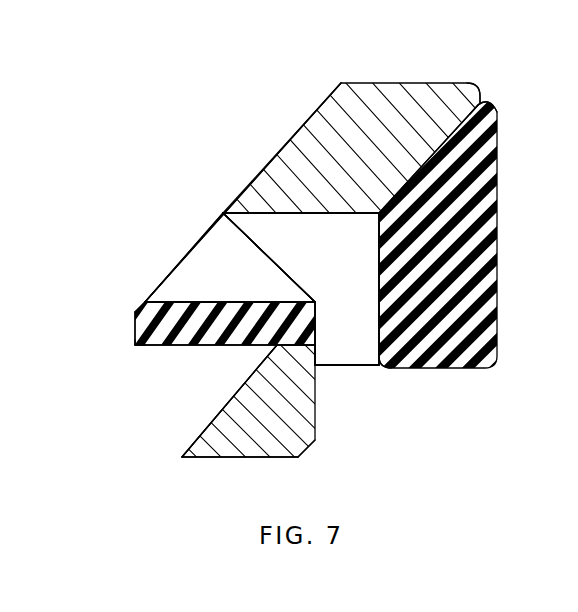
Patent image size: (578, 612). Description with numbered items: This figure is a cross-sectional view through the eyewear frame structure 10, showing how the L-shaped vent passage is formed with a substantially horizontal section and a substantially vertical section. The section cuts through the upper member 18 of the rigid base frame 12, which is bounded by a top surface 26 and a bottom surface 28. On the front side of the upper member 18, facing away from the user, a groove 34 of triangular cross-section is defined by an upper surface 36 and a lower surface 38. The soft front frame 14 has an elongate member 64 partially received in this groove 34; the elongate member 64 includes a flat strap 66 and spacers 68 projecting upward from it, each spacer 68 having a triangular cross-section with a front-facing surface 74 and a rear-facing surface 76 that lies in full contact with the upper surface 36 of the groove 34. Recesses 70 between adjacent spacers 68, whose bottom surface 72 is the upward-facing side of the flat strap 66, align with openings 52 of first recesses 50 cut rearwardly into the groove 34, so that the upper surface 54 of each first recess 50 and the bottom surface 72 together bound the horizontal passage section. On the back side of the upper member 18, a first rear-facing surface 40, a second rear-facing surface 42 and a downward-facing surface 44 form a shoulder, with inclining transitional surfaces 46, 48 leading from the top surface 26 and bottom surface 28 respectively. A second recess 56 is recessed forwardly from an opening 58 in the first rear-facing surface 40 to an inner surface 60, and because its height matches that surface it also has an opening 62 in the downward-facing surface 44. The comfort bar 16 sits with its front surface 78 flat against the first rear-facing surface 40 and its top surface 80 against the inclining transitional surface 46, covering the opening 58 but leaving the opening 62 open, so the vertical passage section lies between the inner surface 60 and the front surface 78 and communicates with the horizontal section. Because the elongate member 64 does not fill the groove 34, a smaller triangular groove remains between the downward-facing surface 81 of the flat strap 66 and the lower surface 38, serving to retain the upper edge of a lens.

The eyewear frame structure 10 is at (216, 109).
The base frame 12 is at (261, 170).
The front frame 14 is at (150, 297).
The comfort bar 16 is at (498, 163).
The upper member 18 is at (381, 83).
The top surface 26 is at (440, 83).
The bottom surface 28 is at (265, 458).
The groove 34 is at (247, 358).
The upper surface 36 is at (240, 223).
The lower surface 38 is at (195, 440).
The first rear-facing surface 40 is at (380, 250).
The second rear-facing surface 42 is at (318, 420).
The downward-facing surface 44 is at (337, 367).
The inclining transitional surface 46 is at (473, 114).
The inclining transitional surface 48 is at (307, 448).
The first recess 50 is at (279, 250).
The opening 52 is at (257, 248).
The upper surface 54 is at (263, 213).
The second recess 56 is at (335, 299).
The opening 58 is at (380, 280).
The inner surface 60 is at (318, 320).
The opening 62 is at (350, 366).
The elongate member 64 is at (135, 345).
The flat strap 66 is at (135, 328).
The spacer 68 is at (188, 302).
The recess 70 is at (225, 284).
The bottom surface 72 is at (163, 279).
The front-facing surface 74 is at (146, 298).
The rear-facing surface 76 is at (285, 262).
The front surface 78 is at (372, 337).
The top surface 80 is at (466, 104).
The downward-facing surface 81 is at (150, 345).